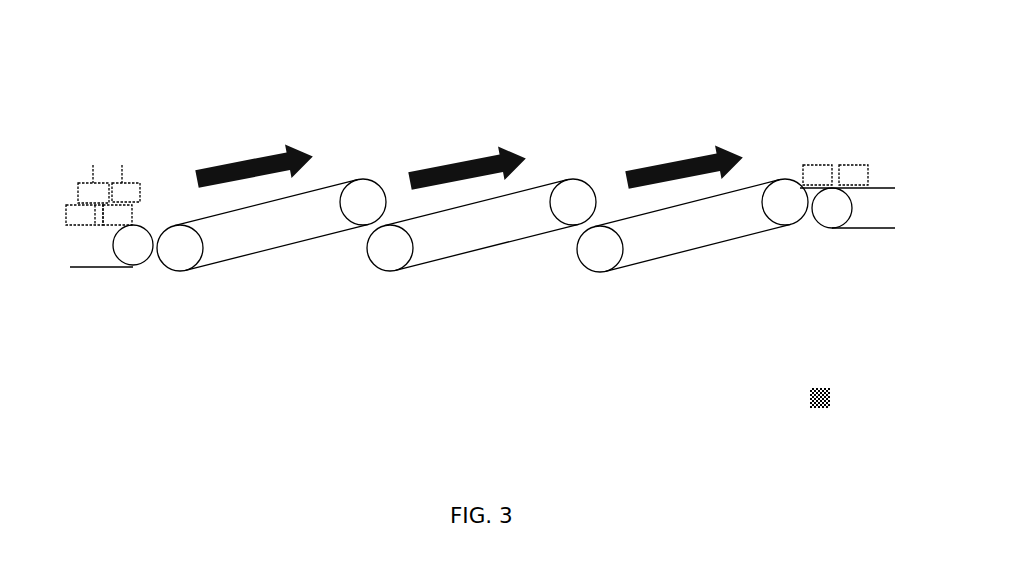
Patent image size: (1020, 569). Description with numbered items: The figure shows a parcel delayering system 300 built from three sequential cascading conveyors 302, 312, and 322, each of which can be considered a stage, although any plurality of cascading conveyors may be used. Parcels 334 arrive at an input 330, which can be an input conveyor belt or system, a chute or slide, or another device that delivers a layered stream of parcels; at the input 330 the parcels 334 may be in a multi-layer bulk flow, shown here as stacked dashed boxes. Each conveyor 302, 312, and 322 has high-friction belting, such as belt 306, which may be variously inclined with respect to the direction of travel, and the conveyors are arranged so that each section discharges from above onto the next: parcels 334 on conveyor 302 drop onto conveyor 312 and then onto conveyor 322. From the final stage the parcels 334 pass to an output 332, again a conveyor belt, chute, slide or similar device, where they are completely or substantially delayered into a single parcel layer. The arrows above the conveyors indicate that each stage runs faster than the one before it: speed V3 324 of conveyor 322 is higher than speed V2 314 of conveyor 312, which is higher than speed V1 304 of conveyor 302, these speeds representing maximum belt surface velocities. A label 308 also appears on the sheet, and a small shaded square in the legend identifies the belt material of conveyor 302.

The parcel delayering system 300 is at (140, 72).
The conveyor 302 is at (260, 260).
The speed V1 304 is at (245, 157).
The belt 306 is at (328, 238).
The transfer region 308 is at (763, 337).
The conveyor 312 is at (472, 255).
The speed V2 314 is at (468, 157).
The conveyor 322 is at (688, 253).
The speed V3 324 is at (690, 157).
The input 330 is at (105, 272).
The output 332 is at (870, 230).
The parcels 334 is at (92, 180).